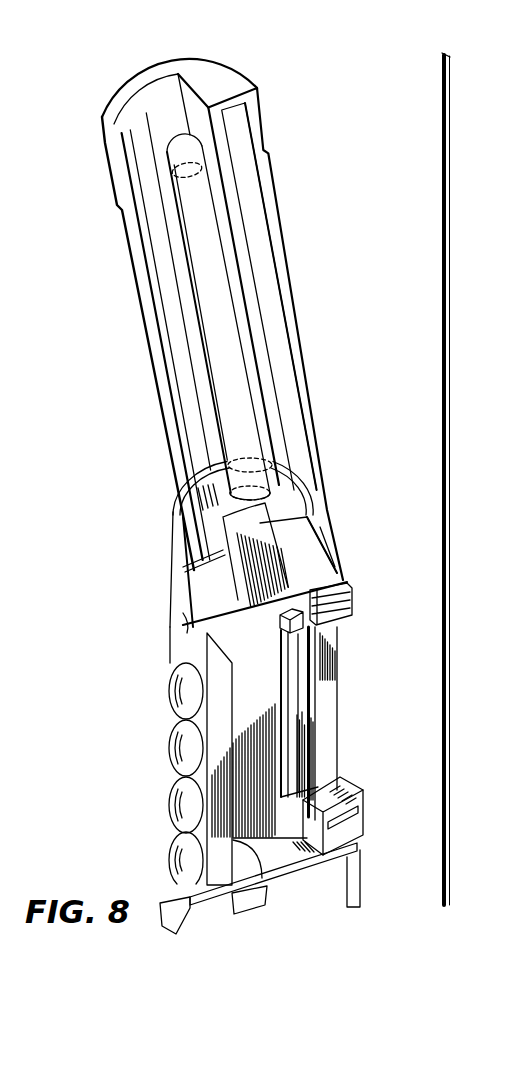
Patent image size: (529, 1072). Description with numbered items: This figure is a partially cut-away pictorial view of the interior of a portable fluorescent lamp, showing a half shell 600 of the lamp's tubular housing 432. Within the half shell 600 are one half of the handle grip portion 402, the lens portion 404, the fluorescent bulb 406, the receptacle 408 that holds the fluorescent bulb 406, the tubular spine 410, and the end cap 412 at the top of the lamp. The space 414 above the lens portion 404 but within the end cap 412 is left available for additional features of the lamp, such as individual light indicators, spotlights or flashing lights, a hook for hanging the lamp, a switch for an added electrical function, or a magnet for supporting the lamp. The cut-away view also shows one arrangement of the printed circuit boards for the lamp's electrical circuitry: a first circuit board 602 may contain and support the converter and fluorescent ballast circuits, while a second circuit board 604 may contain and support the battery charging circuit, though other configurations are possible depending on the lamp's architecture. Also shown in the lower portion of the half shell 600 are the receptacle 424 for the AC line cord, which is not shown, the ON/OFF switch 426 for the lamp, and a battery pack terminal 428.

The handle grip portion 402 is at (170, 694).
The lens portion 404 is at (150, 330).
The fluorescent bulb 406 is at (192, 212).
The receptacle for the fluorescent bulb 408 is at (300, 498).
The tubular spine 410 is at (260, 233).
The end cap 412 is at (197, 58).
The space above the lens portion 414 is at (140, 107).
The receptacle for the AC line cord 424 is at (357, 848).
The ON/OFF switch 426 is at (352, 598).
The battery pack terminal 428 is at (252, 905).
The tubular housing 432 is at (446, 490).
The half shell 600 is at (346, 929).
The first circuit board 602 is at (318, 700).
The second circuit board 604 is at (262, 870).